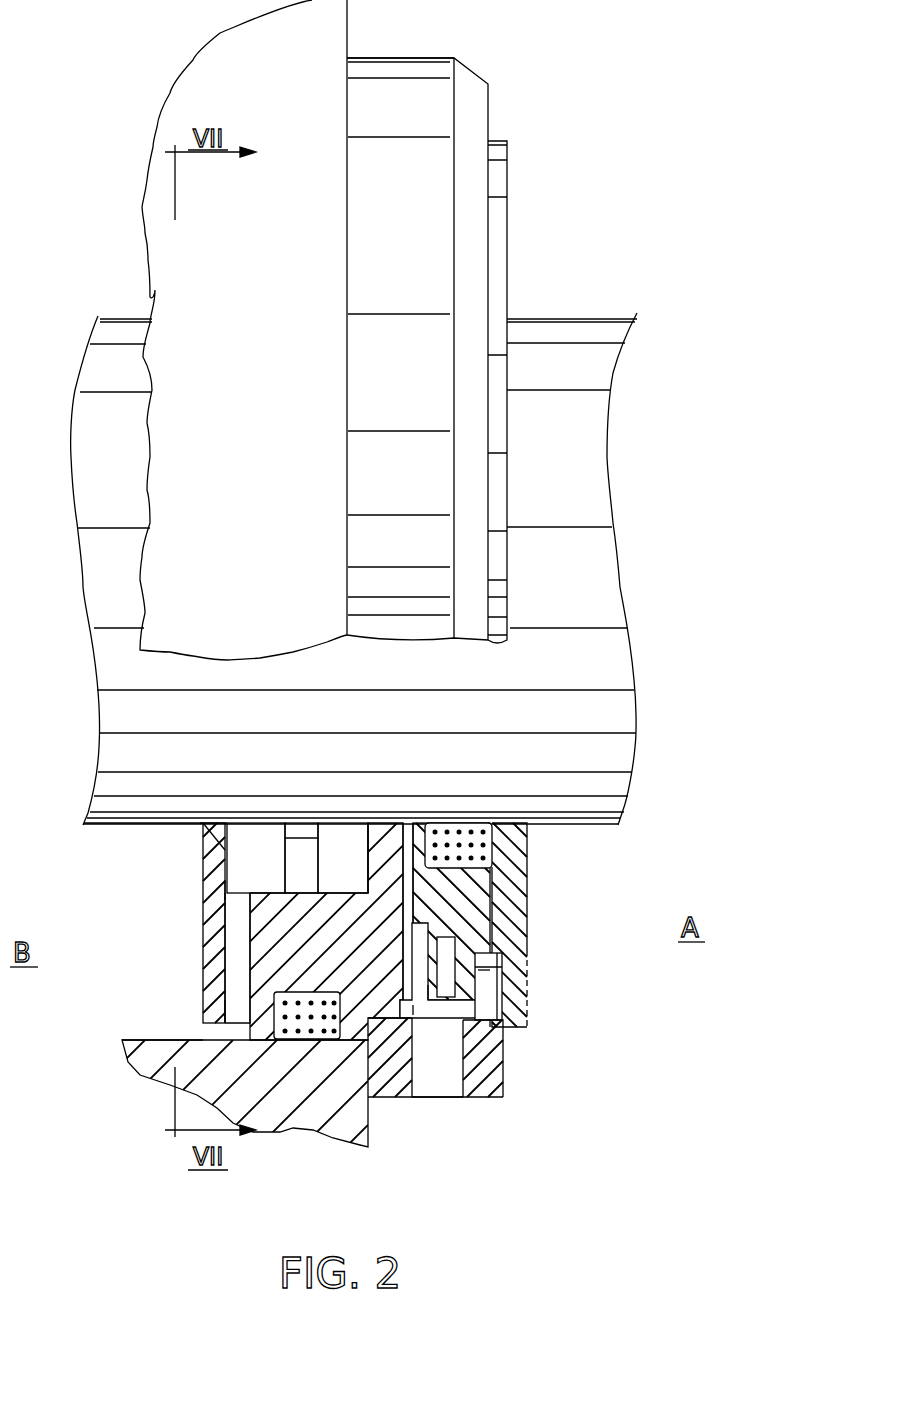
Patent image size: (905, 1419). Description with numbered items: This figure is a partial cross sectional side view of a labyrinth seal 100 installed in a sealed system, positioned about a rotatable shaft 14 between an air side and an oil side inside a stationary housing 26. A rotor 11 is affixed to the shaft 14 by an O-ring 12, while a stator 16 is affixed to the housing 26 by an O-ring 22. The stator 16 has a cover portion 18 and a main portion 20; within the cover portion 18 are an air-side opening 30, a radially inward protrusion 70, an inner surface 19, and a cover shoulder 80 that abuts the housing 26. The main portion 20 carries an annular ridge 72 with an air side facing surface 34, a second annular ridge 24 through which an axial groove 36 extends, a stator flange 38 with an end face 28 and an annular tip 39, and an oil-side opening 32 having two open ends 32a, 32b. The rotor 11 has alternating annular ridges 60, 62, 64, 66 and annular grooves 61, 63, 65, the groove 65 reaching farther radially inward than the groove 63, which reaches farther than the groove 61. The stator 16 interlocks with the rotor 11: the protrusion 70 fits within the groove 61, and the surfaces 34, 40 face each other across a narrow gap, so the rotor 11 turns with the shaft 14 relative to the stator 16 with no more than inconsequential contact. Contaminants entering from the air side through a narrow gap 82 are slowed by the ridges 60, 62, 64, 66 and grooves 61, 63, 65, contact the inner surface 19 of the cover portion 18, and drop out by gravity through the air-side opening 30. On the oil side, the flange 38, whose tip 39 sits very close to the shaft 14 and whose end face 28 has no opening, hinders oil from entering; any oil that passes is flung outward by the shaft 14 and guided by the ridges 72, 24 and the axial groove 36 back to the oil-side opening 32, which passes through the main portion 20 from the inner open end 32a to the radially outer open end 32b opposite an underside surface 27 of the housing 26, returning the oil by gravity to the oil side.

The labyrinth seal 100 is at (640, 140).
The rotor 11 is at (495, 140).
The O-ring 12 is at (480, 838).
The rotatable shaft 14 is at (543, 332).
The stator 16 is at (420, 306).
The cover portion 18 is at (410, 57).
The inner surface 19 is at (427, 1022).
The main portion 20 is at (250, 960).
The O-ring 22 is at (265, 1032).
The second annular ridge 24 is at (298, 868).
The stationary housing 26 is at (208, 306).
The underside surface 27 is at (150, 1033).
The end face 28 is at (200, 928).
The air-side opening 30 is at (450, 1085).
The oil-side opening 32 is at (240, 918).
The open end 32a is at (237, 890).
The open end 32b is at (237, 1010).
The air side facing surface 34 is at (408, 833).
The axial groove 36 is at (225, 850).
The stator flange 38 is at (200, 838).
The annular tip 39 is at (200, 829).
The surface 40 is at (398, 908).
The annular ridge 60 is at (418, 988).
The annular groove 61 is at (490, 963).
The annular ridge 62 is at (468, 986).
The annular groove 63 is at (445, 938).
The annular ridge 64 is at (437, 958).
The annular groove 65 is at (425, 1010).
The annular ridge 66 is at (520, 1012).
The radially inward protrusion 70 is at (477, 1042).
The annular ridge 72 is at (385, 880).
The cover shoulder 80 is at (387, 1050).
The narrow gap 82 is at (505, 1028).